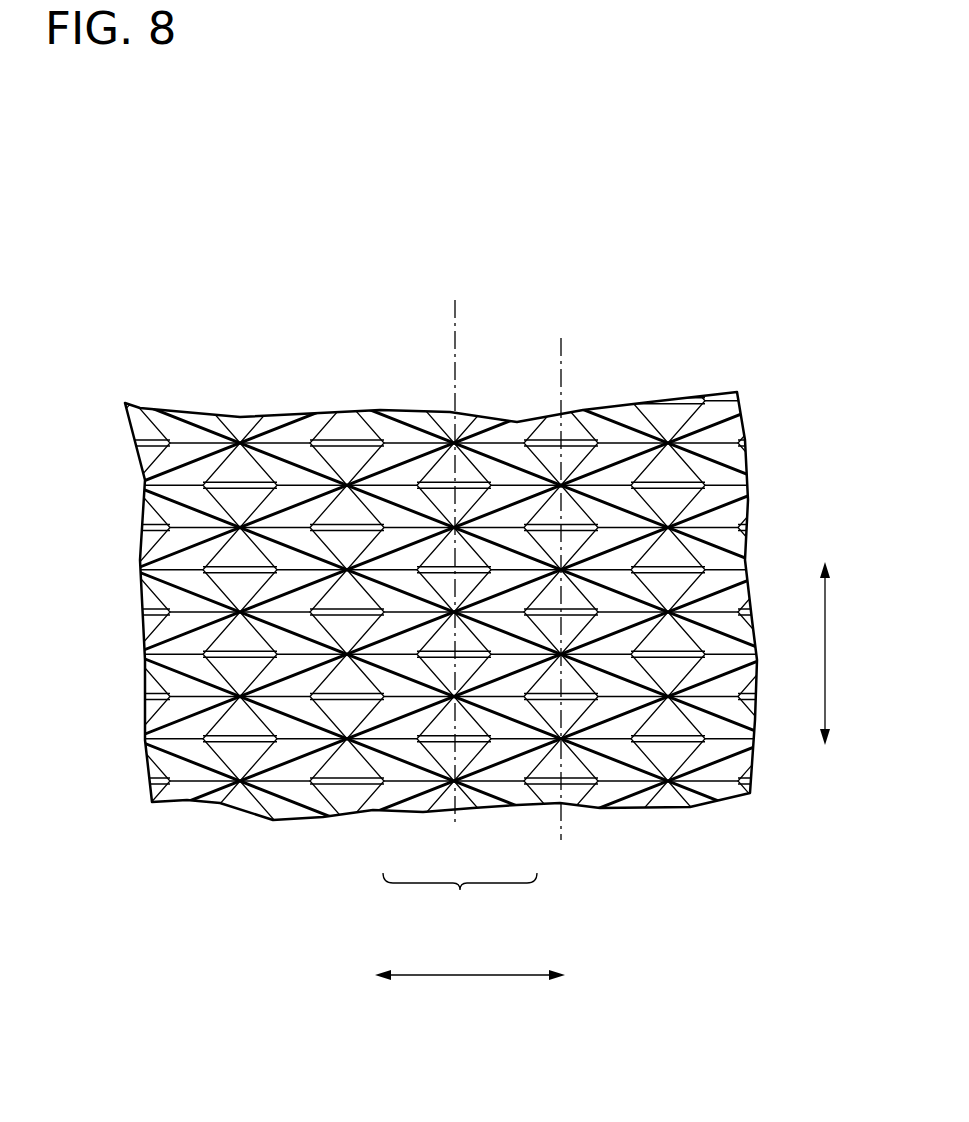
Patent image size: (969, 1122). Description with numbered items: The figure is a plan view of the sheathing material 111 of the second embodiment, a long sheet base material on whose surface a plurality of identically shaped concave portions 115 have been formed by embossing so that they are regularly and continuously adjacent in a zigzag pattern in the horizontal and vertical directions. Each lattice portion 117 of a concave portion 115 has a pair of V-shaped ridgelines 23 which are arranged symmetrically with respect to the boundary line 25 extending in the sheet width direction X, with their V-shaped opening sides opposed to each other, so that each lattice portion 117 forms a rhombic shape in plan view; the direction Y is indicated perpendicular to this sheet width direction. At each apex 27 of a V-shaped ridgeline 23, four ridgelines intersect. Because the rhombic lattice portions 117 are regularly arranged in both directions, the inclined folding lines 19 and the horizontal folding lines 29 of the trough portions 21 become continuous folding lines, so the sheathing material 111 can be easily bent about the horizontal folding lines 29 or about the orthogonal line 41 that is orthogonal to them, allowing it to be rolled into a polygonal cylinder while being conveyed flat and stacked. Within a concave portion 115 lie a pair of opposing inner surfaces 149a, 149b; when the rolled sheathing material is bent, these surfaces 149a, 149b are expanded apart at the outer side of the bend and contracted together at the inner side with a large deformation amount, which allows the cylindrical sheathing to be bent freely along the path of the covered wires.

The sheathing material 111 is at (300, 318).
The concave portion 115 is at (383, 438).
The lattice portion 117 is at (294, 505).
The V-shaped ridgeline 23 is at (198, 455).
The orthogonal line 41 is at (455, 322).
The boundary line 25 is at (562, 360).
The opposing inner surface 149a is at (203, 557).
The opposing inner surface 149b is at (201, 583).
The apex 27 is at (307, 640).
The inclined folding line 19 is at (397, 653).
The horizontal folding line 29 is at (443, 657).
The trough portion 21 is at (460, 898).
The sheet width direction X is at (815, 653).
The direction orthogonal to sheet width direction Y is at (470, 959).